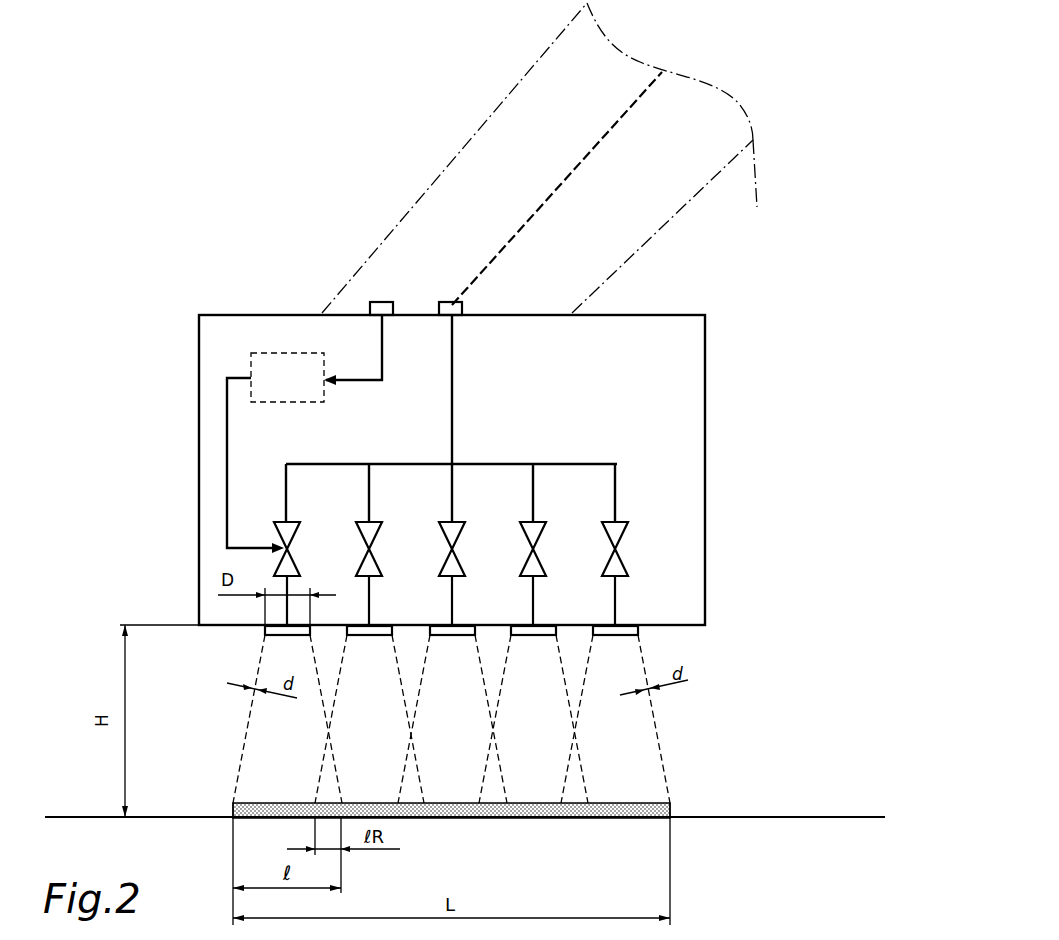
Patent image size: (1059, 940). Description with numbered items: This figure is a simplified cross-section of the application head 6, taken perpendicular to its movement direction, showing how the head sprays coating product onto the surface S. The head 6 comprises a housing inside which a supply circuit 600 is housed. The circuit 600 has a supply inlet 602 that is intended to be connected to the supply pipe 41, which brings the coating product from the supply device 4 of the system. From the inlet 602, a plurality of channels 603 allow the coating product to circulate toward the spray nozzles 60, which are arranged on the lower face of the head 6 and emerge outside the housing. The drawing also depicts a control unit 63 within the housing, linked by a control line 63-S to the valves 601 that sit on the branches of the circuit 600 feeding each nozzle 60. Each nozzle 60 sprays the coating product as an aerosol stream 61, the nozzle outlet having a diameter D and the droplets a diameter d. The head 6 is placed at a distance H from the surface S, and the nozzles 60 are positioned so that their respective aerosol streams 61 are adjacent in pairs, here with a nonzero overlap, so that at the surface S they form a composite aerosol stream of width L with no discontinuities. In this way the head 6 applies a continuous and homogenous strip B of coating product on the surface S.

The coating material supply pipe 4 is at (539, 158).
The supply pipe 41 is at (543, 200).
The supply inlet 602 is at (443, 310).
The application head 6 is at (705, 398).
The channels 603 is at (452, 360).
The control unit 63 is at (316, 358).
The control signal line 63-S is at (227, 455).
The supply circuit 600 is at (536, 428).
The valves 601 is at (290, 531).
The spray nozzles 60 is at (280, 632).
The aerosol stream 61 is at (282, 732).
The surface S is at (756, 811).
The strip of coating product B is at (615, 818).